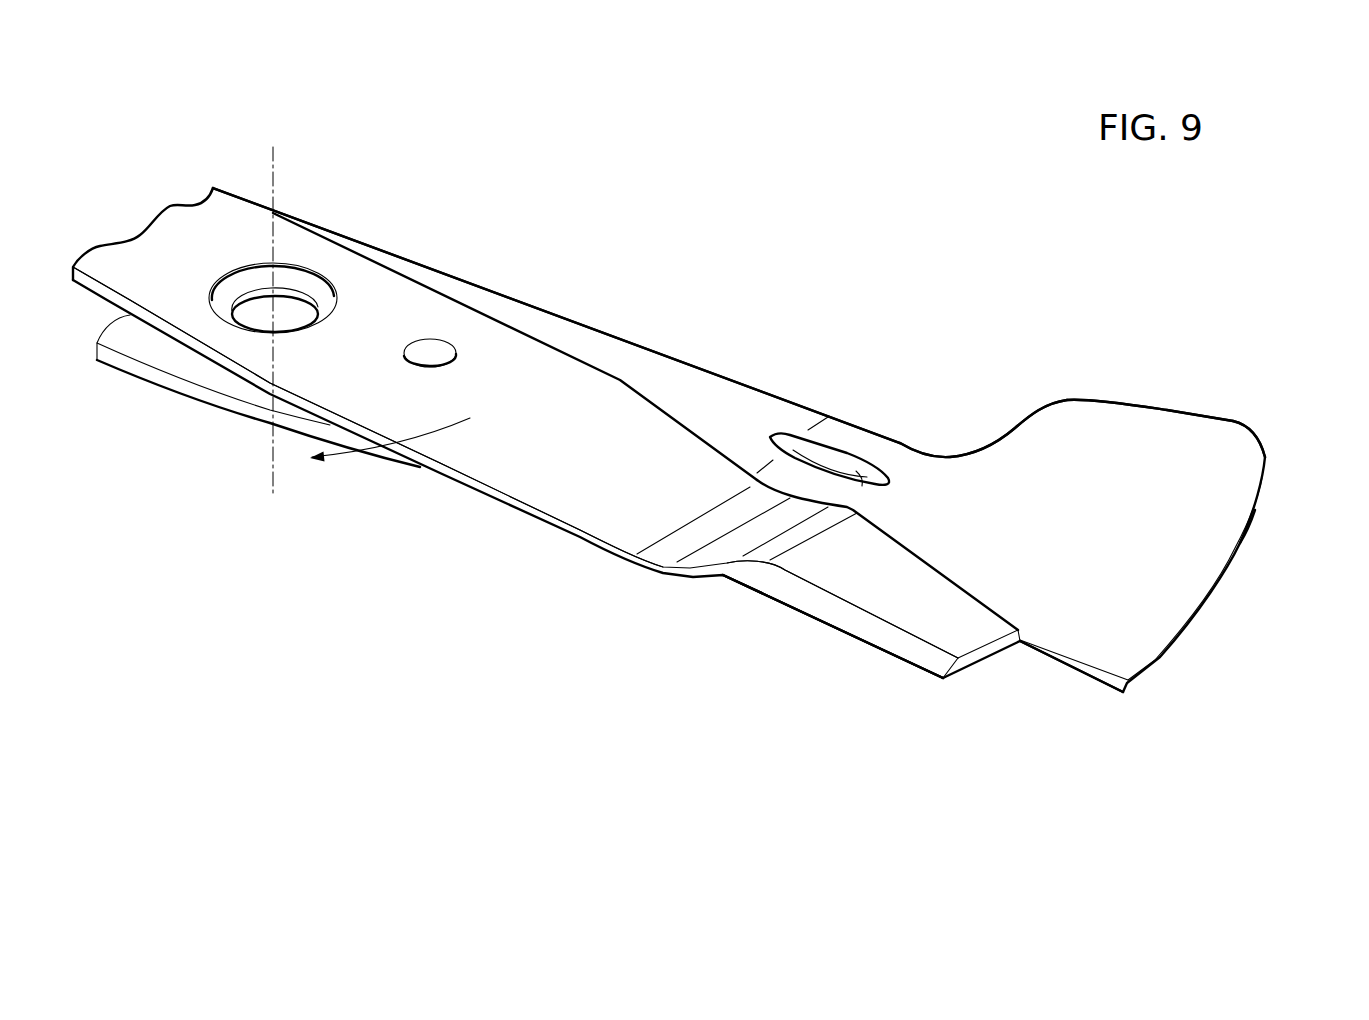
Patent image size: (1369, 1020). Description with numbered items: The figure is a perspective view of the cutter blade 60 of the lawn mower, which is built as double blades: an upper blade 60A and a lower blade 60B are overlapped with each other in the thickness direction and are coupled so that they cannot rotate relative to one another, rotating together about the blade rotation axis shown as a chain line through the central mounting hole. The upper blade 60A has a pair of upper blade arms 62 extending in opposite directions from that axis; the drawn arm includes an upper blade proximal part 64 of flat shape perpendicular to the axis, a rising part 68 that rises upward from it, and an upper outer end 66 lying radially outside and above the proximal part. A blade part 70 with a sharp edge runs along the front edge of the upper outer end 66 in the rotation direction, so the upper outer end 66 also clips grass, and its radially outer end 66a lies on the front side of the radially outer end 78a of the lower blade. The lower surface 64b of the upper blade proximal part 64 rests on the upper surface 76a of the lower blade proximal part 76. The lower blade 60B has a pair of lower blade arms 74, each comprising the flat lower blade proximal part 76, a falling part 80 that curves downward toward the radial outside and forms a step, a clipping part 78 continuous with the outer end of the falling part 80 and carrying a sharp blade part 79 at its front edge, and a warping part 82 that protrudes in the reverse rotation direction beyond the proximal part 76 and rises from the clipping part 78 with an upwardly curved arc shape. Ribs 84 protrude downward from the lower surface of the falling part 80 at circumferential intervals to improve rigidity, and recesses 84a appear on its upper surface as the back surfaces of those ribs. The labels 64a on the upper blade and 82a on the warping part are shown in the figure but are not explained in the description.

The cutter blade 60 is at (1102, 191).
The upper blade 60A is at (968, 684).
The lower blade 60B is at (1257, 548).
The upper blade arms 62 is at (556, 675).
The upper blade proximal part 64 is at (598, 518).
The rear edge of base portion 64a is at (642, 430).
The lower surface 64b is at (508, 472).
The upper outer end 66 is at (843, 583).
The radially outer end 66a is at (985, 632).
The rising part 68 is at (715, 553).
The blade part 70 is at (857, 627).
The lower blade arms 74 is at (1178, 330).
The lower blade proximal part 76 is at (760, 408).
The upper surface 76a is at (547, 322).
The clipping part 78 is at (1065, 585).
The radially outer end 78a is at (1135, 617).
The blade part 79 is at (1066, 668).
The falling part 80 is at (947, 510).
The warping part 82 is at (1135, 437).
The corner of second wing 82a is at (1207, 412).
The ribs 84 is at (852, 470).
The recesses 84a is at (852, 472).